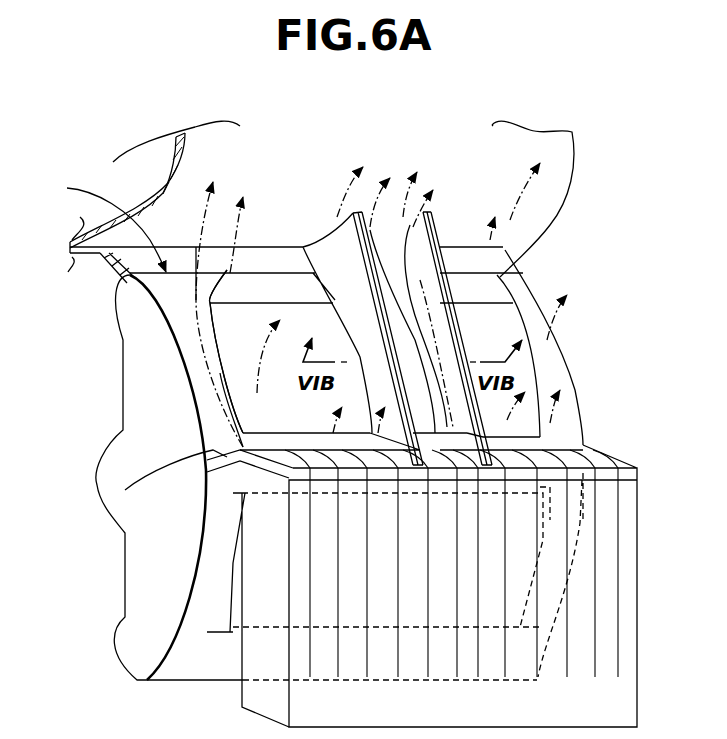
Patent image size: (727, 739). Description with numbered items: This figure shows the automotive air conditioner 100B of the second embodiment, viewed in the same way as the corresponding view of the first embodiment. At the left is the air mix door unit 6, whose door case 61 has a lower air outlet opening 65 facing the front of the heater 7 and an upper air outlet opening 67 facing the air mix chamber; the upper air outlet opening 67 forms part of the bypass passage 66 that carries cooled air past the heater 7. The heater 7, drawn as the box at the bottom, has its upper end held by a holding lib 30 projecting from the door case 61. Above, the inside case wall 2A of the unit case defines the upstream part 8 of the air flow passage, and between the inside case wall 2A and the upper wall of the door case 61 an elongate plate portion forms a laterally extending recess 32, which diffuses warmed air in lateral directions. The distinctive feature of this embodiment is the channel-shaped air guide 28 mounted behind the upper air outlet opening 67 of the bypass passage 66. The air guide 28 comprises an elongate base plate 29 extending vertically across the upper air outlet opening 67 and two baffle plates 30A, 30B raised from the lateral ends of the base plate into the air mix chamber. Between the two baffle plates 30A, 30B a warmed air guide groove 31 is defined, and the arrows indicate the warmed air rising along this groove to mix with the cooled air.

The inside case wall 2A is at (573, 157).
The automotive air conditioner 100B is at (572, 86).
The upstream part 8 is at (153, 213).
The door case 61 is at (178, 285).
The air mix door unit 6 is at (106, 227).
The recess 32 is at (128, 259).
The lower air outlet opening 65 is at (222, 592).
The upper air outlet opening 67 is at (233, 373).
The bypass passage 66 is at (131, 352).
The holding lib 30 is at (210, 457).
The heater 7 is at (258, 698).
The baffle plate 30B is at (322, 254).
The air guide 28 is at (325, 226).
The baffle plate 30A is at (440, 225).
The base plate 29 is at (407, 347).
The warmed air guide groove 31 is at (425, 262).